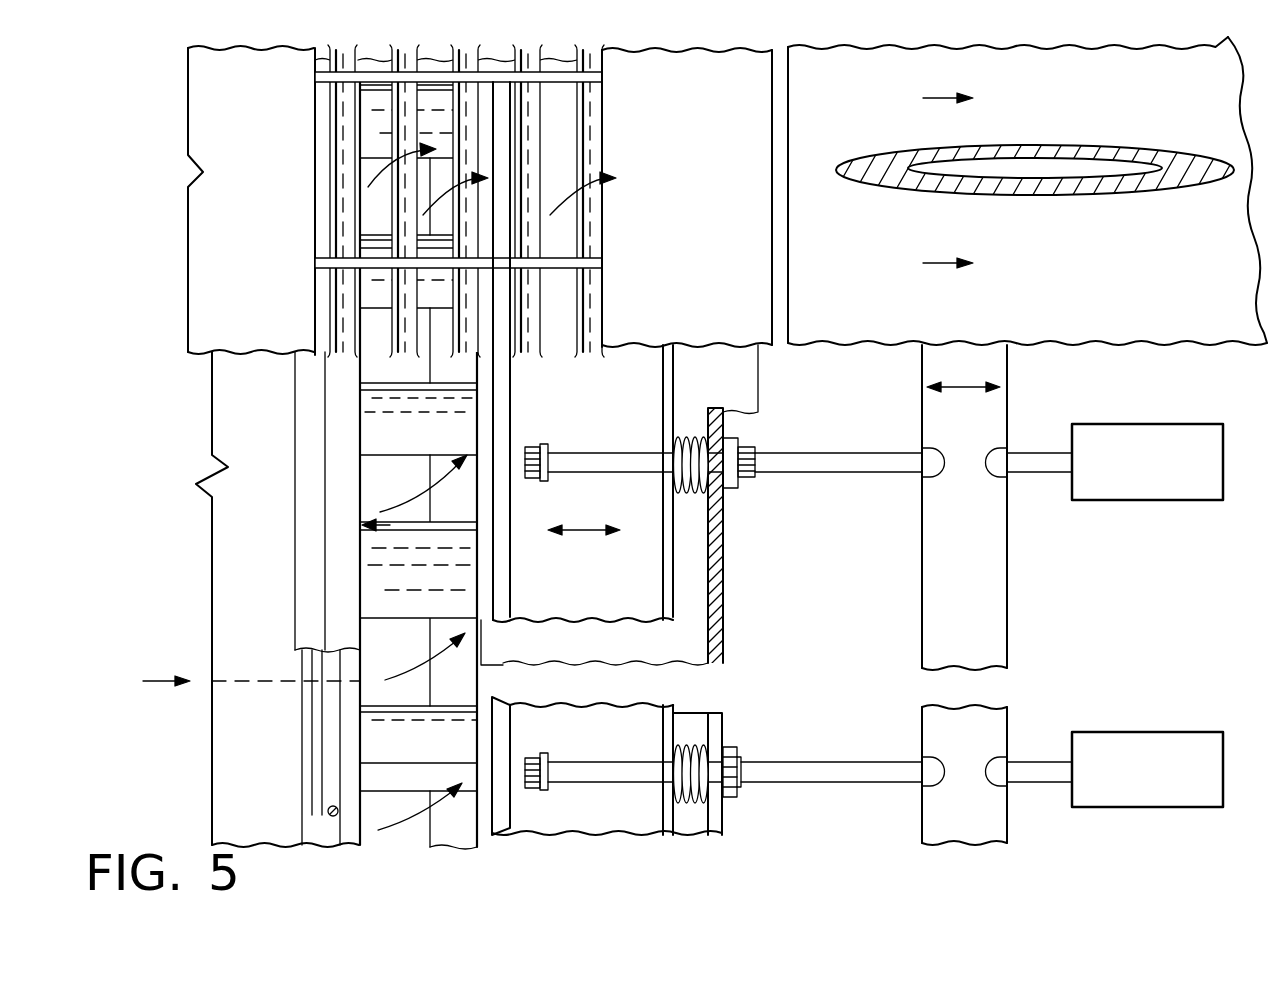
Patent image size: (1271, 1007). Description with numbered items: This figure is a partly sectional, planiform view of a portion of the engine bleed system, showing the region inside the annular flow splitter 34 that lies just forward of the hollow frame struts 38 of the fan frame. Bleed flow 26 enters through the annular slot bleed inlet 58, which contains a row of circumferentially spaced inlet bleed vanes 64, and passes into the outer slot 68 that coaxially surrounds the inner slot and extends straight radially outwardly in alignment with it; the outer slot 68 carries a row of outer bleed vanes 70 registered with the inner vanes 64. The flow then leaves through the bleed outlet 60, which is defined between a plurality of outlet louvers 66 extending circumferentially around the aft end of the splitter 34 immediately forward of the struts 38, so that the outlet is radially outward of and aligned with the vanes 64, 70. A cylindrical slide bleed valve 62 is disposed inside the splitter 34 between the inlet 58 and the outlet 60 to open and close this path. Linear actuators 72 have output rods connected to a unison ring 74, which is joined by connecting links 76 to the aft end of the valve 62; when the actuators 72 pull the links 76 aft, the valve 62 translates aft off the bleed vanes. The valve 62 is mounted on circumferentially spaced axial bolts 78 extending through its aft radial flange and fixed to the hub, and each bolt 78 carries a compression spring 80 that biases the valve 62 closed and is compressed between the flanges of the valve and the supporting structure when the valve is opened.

The cooling air flow 26 is at (925, 100).
The annular flow splitter 34 is at (263, 224).
The hollow frame strut 38 is at (1095, 145).
The bleed inlet 58 is at (450, 836).
The bleed outlet 60 is at (465, 179).
The bleed valve 62 is at (595, 586).
The inlet bleed vanes 64 is at (477, 736).
The outlet louvers 66 is at (410, 50).
The outer slot 68 is at (367, 485).
The outer bleed vanes 70 is at (456, 433).
The linear actuator 72 is at (1165, 477).
The unison ring 74 is at (977, 592).
The connecting link 76 is at (820, 478).
The axial bolt 78 is at (585, 788).
The compression spring 80 is at (690, 745).